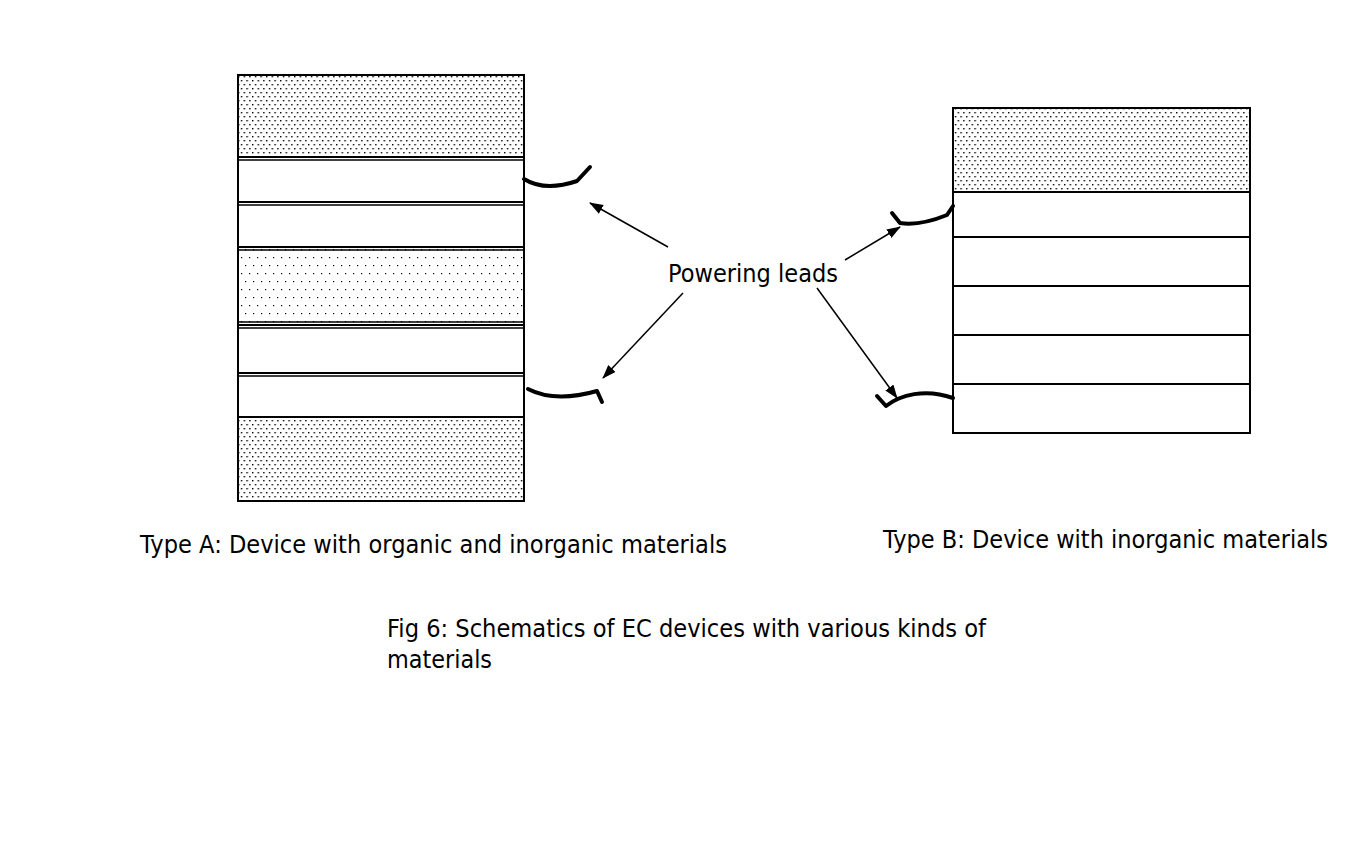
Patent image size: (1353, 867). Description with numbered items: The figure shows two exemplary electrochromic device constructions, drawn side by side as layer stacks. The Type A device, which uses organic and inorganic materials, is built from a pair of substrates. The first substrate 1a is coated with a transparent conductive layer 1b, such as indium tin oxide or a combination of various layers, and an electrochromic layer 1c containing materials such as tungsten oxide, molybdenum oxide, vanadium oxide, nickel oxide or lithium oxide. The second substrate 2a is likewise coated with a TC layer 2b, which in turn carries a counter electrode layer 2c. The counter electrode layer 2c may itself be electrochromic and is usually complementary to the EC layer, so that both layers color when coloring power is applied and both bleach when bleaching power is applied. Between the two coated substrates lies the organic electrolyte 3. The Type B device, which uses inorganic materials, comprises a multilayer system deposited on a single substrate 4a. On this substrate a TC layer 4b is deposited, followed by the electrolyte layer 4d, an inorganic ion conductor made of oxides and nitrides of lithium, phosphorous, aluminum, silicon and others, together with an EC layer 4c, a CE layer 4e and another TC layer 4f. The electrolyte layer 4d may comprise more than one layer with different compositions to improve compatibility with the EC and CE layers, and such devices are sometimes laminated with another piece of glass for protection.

The first substrate 1a is at (381, 117).
The transparent conductive (TC) layer 1b is at (381, 179).
The electrochromic (EC) layer 1c is at (381, 224).
The organic electrolyte 3 is at (381, 286).
The counter electrode (CE) layer 2c is at (381, 349).
The TC layer 2b is at (381, 395).
The substrate 2a is at (381, 459).
The single substrate 4a is at (1101, 150).
The TC layer 4b is at (1101, 214).
The EC layer 4c is at (1101, 261).
The electrolyte layer 4d is at (1101, 310).
The CE layer 4e is at (1101, 359).
The TC layer 4f is at (1101, 408).